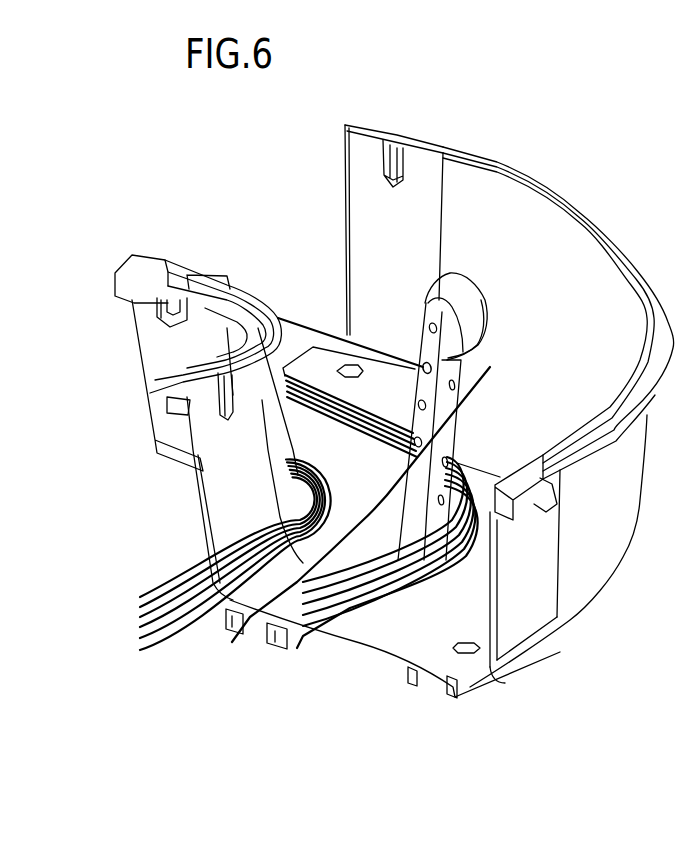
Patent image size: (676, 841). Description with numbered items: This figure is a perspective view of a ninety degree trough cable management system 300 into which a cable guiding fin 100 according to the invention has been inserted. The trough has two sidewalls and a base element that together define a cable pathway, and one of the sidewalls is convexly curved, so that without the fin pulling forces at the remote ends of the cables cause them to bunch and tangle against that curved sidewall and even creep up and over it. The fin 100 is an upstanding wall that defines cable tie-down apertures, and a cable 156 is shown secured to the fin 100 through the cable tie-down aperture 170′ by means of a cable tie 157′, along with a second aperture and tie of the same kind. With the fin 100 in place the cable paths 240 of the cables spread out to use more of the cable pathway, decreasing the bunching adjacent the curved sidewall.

The cable management system 300 is at (560, 131).
The cable 156 is at (355, 350).
The cable guiding fin 100 is at (485, 300).
The cable tie-down aperture 170′ is at (430, 365).
The cable tie 157′ is at (425, 366).
The cable paths 240 is at (297, 648).